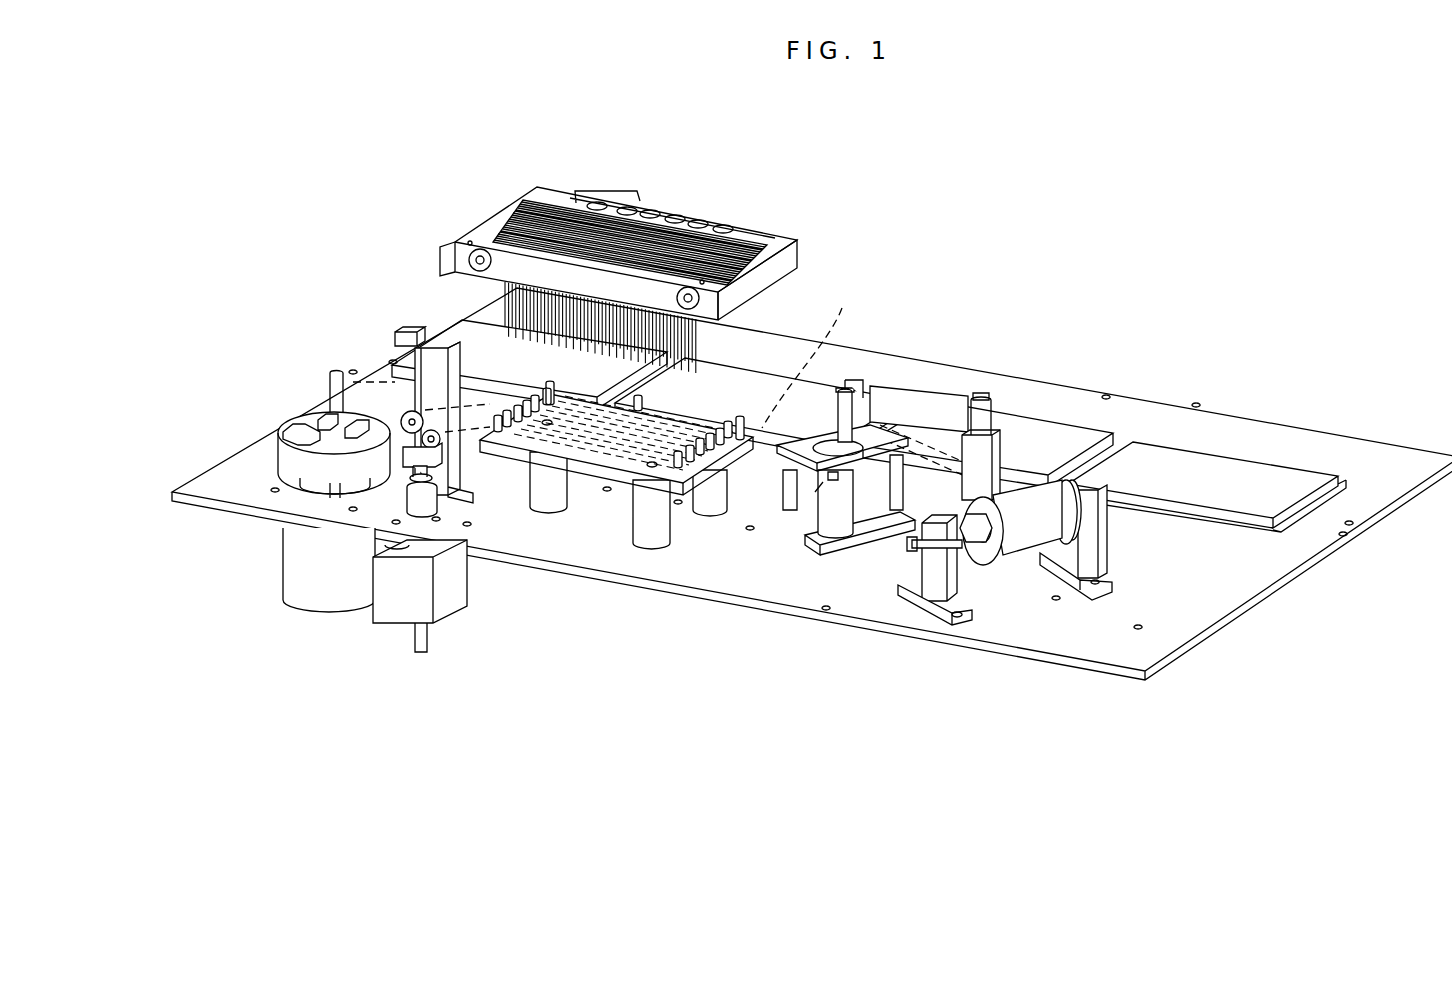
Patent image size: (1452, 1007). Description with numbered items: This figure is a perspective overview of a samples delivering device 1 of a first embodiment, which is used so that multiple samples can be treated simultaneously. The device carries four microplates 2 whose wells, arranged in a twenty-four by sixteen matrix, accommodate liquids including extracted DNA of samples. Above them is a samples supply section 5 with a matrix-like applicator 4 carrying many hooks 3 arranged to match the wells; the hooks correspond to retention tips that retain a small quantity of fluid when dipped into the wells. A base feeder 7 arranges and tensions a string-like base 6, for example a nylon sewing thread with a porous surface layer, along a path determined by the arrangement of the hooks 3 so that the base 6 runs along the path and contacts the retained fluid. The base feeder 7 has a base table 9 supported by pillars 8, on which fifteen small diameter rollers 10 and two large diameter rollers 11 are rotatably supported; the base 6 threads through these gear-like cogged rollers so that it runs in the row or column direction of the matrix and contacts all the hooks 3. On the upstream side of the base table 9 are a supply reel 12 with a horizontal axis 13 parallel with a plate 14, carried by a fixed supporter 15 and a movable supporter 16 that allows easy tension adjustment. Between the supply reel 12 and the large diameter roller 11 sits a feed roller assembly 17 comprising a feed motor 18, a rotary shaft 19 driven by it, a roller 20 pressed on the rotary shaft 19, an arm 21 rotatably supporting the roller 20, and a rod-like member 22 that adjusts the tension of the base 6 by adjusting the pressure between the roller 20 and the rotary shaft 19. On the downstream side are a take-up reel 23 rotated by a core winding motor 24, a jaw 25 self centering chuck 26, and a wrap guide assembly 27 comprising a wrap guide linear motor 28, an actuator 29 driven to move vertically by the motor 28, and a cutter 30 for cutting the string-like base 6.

The samples delivering device 1 is at (1006, 218).
The microplates 2 is at (462, 325).
The hooks 3 is at (497, 290).
The matrix-like applicator 4 is at (538, 218).
The samples supply section 5 is at (547, 190).
The string-like base 6 is at (810, 354).
The base feeder 7 is at (350, 367).
The pillars 8 is at (652, 540).
The base table 9 is at (598, 462).
The small diameter rollers 10 is at (508, 430).
The large diameter rollers 11 is at (700, 470).
The supply reel 12 is at (992, 560).
The horizontal axis 13 is at (898, 540).
The plate 14 is at (1030, 378).
The fixed supporter 15 is at (1070, 575).
The movable supporter 16 is at (952, 600).
The feed roller assembly 17 is at (896, 381).
The feed motor 18 is at (822, 545).
The rotary shaft 19 is at (798, 502).
The roller 20 is at (856, 392).
The arm 21 is at (943, 402).
The rod-like member 22 is at (845, 470).
The take-up reel 23 is at (335, 397).
The core winding motor 24 is at (305, 597).
The jaw 25 is at (310, 428).
The self centering chuck 26 is at (288, 458).
The wrap guide assembly 27 is at (399, 409).
The wrap guide linear motor 28 is at (395, 610).
The actuator 29 is at (438, 486).
The cutter 30 is at (398, 338).